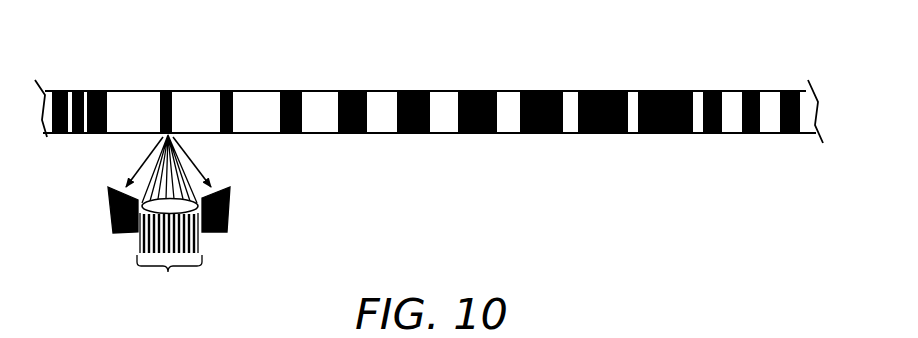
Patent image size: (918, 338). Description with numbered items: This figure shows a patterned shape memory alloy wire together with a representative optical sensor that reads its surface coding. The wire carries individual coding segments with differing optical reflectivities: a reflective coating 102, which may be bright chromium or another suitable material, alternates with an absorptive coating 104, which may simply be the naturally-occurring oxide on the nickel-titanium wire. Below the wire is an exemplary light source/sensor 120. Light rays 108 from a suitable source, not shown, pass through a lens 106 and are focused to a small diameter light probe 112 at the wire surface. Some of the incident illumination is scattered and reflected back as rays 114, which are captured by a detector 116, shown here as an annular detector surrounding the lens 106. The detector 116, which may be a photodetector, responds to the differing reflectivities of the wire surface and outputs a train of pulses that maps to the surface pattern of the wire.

The reflective coating 102 is at (193, 90).
The absorptive coating 104 is at (227, 90).
The lens 106 is at (153, 215).
The light rays 108 is at (168, 272).
The light probe 112 is at (168, 135).
The rays 114 is at (128, 184).
The detector 116 is at (113, 218).
The light source/sensor 120 is at (228, 238).